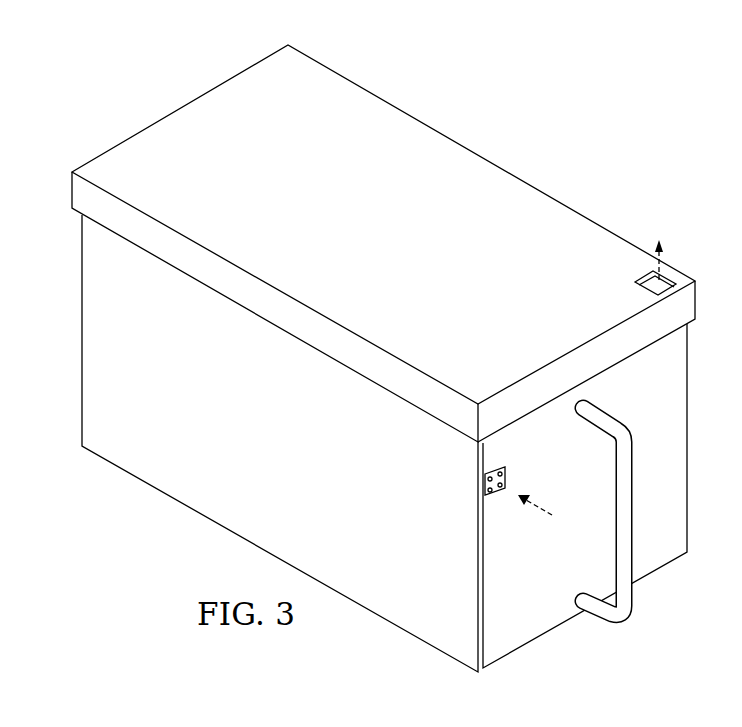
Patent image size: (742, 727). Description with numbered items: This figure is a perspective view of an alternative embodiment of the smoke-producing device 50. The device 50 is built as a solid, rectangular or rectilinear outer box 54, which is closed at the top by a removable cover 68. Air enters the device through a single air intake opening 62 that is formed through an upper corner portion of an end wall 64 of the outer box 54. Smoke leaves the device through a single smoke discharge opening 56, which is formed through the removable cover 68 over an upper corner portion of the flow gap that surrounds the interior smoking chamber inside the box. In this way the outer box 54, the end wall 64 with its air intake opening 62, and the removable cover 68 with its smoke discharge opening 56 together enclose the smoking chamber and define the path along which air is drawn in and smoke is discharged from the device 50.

The smoke-producing device 50 is at (156, 68).
The outer box 54 is at (538, 611).
The smoke discharge opening 56 is at (668, 282).
The air intake opening 62 is at (499, 467).
The end wall 64 is at (656, 552).
The removable cover 68 is at (355, 201).